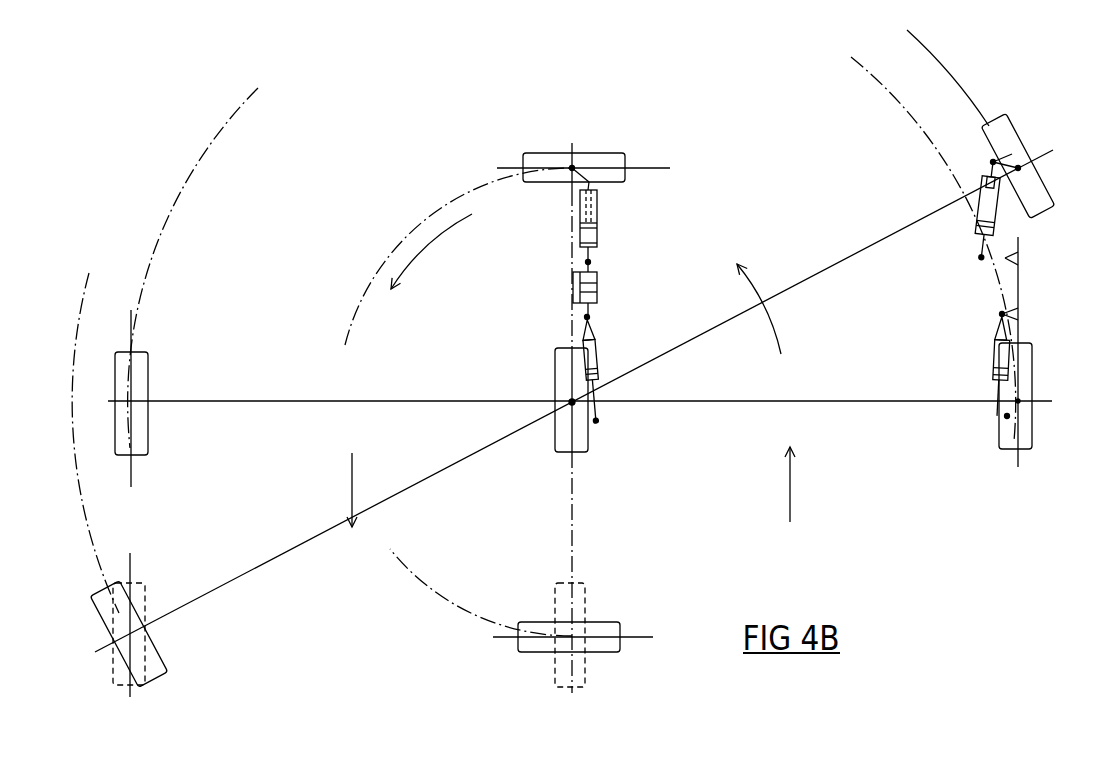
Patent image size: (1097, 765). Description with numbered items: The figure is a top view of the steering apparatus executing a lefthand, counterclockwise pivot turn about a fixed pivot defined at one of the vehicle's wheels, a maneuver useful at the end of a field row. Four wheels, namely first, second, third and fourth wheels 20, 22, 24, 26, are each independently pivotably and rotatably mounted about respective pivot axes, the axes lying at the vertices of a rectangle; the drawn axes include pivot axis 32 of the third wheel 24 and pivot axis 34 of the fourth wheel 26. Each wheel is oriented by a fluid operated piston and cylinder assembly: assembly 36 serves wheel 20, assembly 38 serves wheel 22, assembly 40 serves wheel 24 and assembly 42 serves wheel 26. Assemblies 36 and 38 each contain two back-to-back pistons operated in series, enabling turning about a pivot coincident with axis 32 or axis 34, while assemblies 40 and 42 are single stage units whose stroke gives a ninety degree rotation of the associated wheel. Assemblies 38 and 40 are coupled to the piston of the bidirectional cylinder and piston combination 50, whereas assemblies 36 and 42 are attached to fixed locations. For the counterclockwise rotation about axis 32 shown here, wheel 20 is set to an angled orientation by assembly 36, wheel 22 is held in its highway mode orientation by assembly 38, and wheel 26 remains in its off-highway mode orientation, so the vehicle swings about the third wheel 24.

The first wheel 20 is at (140, 618).
The second wheel 22 is at (612, 156).
The third wheel 24 is at (562, 362).
The fourth wheel 26 is at (142, 386).
The pivot axis 32 is at (570, 398).
The pivot axis 34 is at (1010, 414).
The piston and cylinder assembly 36 is at (985, 207).
The piston and cylinder assembly 38 is at (603, 212).
The piston and cylinder assembly 40 is at (593, 348).
The piston and cylinder assembly 42 is at (997, 353).
The bidirectional fluid operated cylinder and piston combination 50 is at (604, 288).